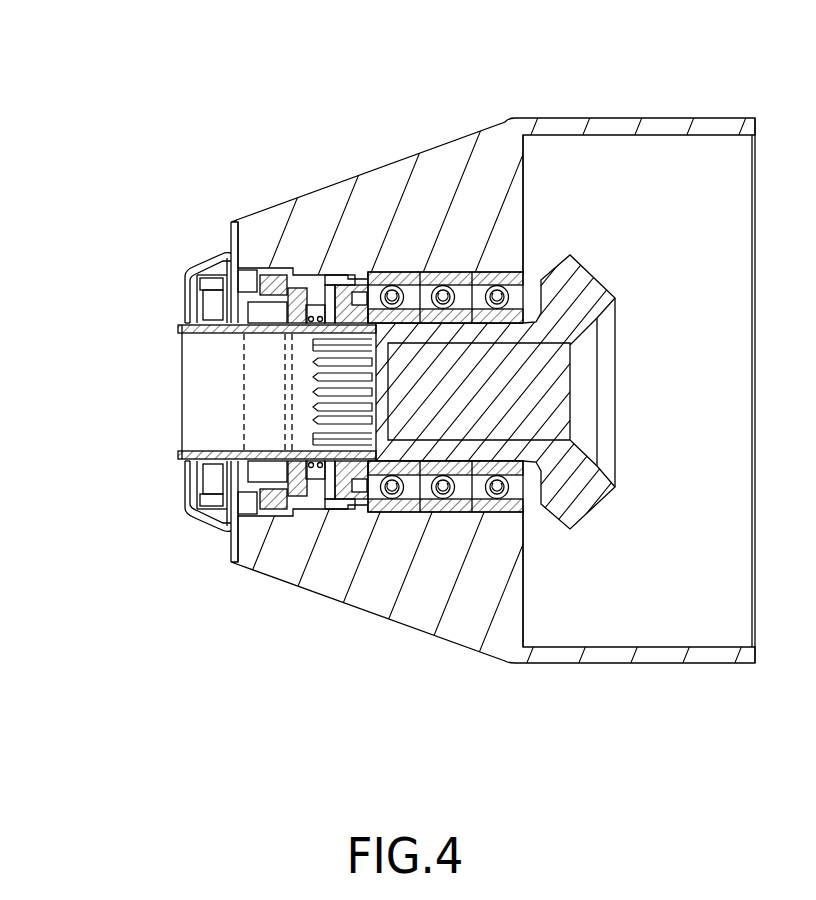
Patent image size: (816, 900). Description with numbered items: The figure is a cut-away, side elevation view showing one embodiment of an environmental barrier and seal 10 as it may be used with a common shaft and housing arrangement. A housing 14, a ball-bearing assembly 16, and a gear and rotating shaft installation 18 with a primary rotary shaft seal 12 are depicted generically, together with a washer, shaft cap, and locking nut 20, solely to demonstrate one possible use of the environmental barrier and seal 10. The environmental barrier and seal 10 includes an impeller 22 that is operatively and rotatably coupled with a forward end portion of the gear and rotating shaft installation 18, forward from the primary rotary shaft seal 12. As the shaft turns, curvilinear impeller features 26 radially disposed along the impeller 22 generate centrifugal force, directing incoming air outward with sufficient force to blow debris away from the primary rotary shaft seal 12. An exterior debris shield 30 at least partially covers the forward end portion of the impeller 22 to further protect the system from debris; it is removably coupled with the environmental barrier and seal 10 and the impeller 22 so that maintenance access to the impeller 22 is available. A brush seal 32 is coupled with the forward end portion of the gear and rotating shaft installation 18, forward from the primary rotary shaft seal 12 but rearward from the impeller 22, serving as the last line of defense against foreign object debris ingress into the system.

The environmental barrier and seal 10 is at (168, 540).
The primary rotary shaft seal 12 is at (288, 273).
The housing 14 is at (627, 118).
The ball-bearing assembly 16 is at (447, 272).
The gear and rotating shaft installation 18 is at (598, 272).
The locking nut 20 is at (343, 273).
The impeller 22 is at (235, 318).
The curvilinear impeller features 26 is at (212, 500).
The exterior debris shield 30 is at (207, 260).
The brush seal 32 is at (247, 270).